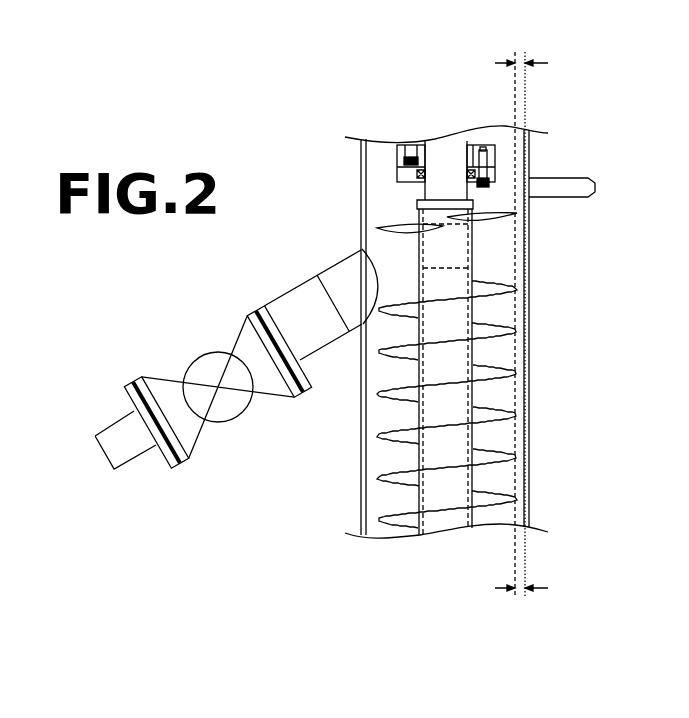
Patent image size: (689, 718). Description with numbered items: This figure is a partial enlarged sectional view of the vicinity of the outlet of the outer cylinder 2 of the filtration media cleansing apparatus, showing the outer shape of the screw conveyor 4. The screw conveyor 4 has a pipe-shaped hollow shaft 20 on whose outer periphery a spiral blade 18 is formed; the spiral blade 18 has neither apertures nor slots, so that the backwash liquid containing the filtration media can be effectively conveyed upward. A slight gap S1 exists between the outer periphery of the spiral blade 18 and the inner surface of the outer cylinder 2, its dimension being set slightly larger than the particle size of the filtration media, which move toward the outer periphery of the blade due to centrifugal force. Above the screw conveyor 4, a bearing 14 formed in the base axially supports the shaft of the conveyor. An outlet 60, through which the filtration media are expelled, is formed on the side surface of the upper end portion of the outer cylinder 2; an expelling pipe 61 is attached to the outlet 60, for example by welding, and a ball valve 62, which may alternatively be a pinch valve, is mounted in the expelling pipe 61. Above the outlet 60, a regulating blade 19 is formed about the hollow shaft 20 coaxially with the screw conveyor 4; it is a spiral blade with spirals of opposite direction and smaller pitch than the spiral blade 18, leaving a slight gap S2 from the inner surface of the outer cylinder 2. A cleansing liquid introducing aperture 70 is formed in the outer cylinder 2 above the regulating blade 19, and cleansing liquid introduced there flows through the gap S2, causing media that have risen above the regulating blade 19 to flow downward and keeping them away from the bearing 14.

The outer cylinder 2 is at (530, 475).
The screw conveyor 4 is at (488, 372).
The bearing 14 is at (395, 160).
The spiral blade 18 is at (505, 332).
The regulating blade 19 is at (500, 214).
The hollow shaft 20 is at (478, 352).
The outlet 60 is at (360, 270).
The expelling pipe 61 is at (140, 453).
The ball valve 62 is at (185, 370).
The cleansing liquid introducing aperture 70 is at (568, 178).
The gap S1 is at (521, 607).
The gap S2 is at (521, 312).